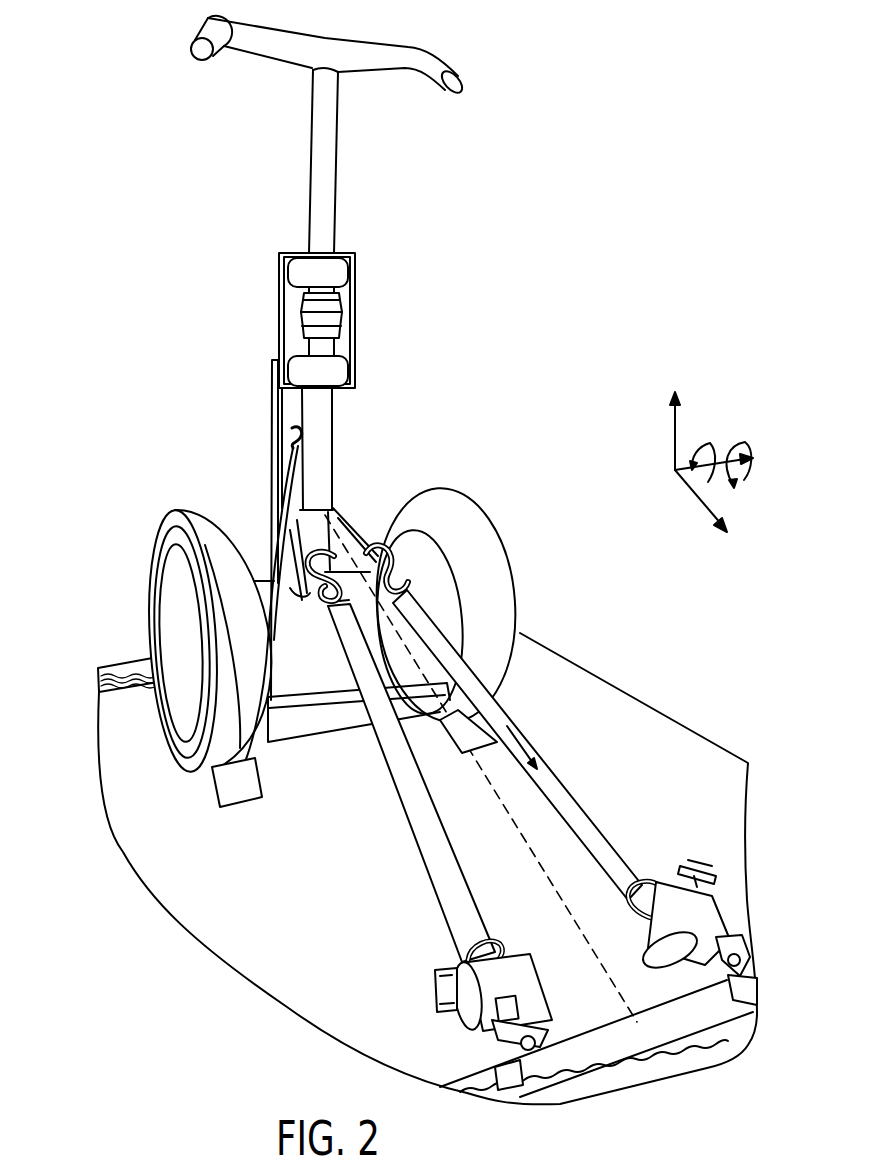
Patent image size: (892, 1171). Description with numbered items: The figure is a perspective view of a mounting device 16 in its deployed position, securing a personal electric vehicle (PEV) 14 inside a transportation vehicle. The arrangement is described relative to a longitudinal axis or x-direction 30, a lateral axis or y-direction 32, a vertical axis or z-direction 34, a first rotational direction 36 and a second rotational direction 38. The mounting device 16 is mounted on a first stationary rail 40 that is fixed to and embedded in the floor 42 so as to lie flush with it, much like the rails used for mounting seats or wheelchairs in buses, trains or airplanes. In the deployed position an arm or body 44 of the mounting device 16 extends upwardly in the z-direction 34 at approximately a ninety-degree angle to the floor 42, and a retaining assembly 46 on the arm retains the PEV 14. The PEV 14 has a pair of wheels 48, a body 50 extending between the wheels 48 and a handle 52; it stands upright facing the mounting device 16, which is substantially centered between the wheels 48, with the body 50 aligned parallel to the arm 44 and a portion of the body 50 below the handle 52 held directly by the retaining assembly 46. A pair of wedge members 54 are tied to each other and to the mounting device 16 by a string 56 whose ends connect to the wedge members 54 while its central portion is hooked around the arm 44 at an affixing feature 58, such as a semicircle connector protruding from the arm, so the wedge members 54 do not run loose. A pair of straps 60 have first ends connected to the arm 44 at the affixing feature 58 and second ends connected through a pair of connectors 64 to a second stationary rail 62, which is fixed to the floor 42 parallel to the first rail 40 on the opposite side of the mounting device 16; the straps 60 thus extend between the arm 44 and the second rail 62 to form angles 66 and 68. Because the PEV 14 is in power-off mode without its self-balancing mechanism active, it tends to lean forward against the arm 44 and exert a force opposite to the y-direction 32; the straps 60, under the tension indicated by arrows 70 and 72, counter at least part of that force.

The personal electric vehicle 14 is at (494, 210).
The mounting device 16 is at (258, 438).
The longitudinal axis 30 is at (680, 473).
The lateral axis 32 is at (697, 500).
The vertical axis 34 is at (675, 435).
The first rotational direction 36 is at (709, 440).
The second rotational direction 38 is at (743, 440).
The first stationary rail 40 is at (120, 667).
The floor 42 is at (122, 746).
The arm 44 is at (272, 485).
The retaining assembly 46 is at (390, 332).
The wheels 48 is at (510, 682).
The body 50 is at (324, 441).
The handle 52 is at (380, 63).
The wedge members 54 is at (236, 790).
The string 56 is at (271, 584).
The affixing feature 58 is at (284, 414).
The straps 60 is at (620, 848).
The second stationary rail 62 is at (600, 1038).
The connectors 64 is at (671, 884).
The angle 66 is at (400, 652).
The angle 68 is at (415, 678).
The arrow 70 is at (424, 803).
The arrow 72 is at (512, 735).